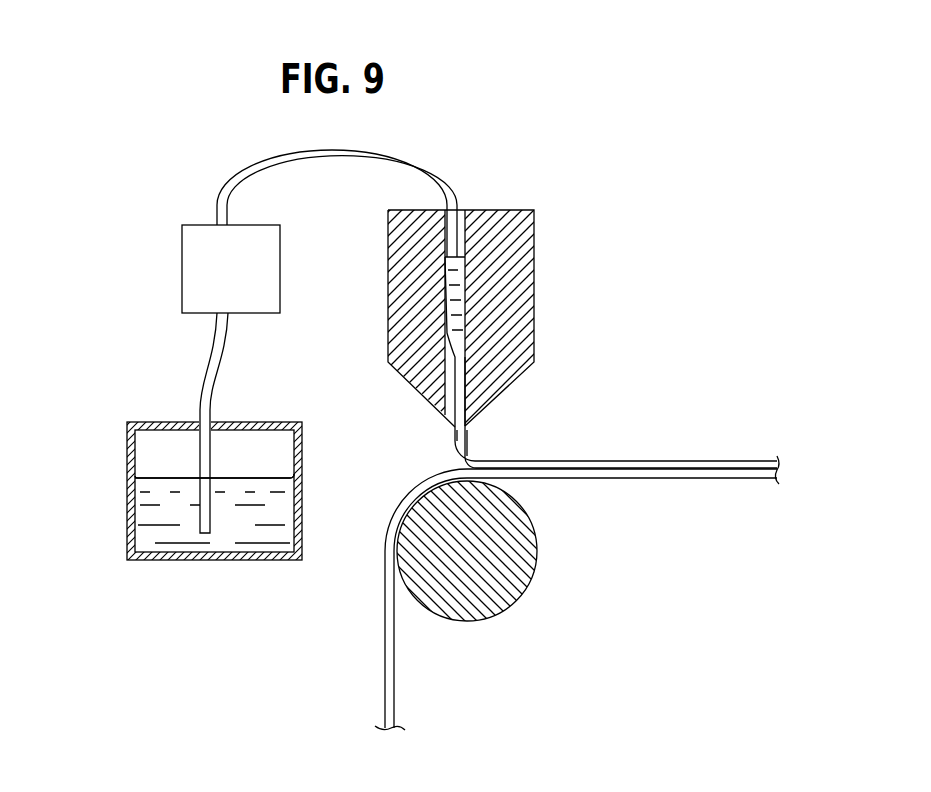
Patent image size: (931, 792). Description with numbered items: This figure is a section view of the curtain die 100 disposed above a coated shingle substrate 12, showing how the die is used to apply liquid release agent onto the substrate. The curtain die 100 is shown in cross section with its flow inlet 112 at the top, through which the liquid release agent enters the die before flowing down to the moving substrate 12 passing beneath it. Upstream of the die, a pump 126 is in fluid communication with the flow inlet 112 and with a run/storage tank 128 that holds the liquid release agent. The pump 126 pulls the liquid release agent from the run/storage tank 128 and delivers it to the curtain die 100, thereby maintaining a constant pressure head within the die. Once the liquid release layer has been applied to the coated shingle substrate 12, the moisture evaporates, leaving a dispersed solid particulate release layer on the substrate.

The curtain die 100 is at (552, 248).
The flow inlet 112 is at (447, 242).
The pump 126 is at (208, 277).
The run/storage tank 128 is at (297, 453).
The coated shingle substrate 12 is at (653, 481).